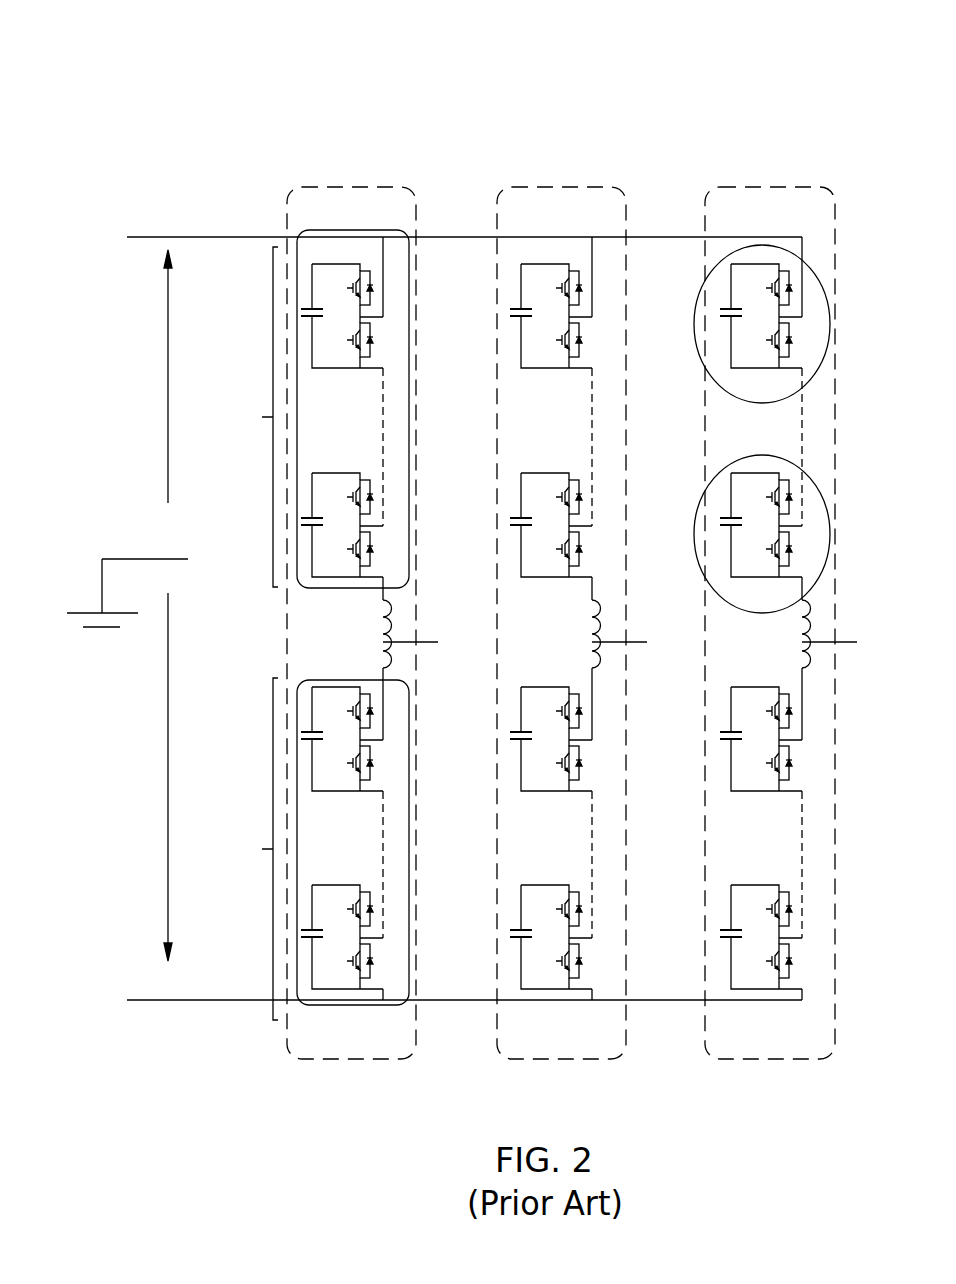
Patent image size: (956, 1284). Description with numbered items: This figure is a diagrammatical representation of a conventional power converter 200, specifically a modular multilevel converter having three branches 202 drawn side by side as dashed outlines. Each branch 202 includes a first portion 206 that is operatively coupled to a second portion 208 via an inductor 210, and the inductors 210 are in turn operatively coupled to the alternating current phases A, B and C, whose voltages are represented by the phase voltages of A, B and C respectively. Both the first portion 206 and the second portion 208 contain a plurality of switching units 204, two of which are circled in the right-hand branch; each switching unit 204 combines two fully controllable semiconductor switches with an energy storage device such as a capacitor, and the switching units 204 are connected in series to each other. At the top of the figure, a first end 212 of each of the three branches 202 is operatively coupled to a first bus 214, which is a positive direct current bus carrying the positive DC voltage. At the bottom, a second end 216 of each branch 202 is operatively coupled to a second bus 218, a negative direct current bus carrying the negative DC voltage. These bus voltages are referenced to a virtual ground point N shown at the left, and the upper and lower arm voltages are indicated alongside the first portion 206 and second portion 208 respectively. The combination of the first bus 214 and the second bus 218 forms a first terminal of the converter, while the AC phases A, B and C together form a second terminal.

The power converter 200 is at (785, 38).
The branch 202 is at (750, 186).
The switching unit 204 is at (810, 380).
The first portion 206 is at (297, 570).
The second portion 208 is at (297, 777).
The inductor 210 is at (383, 645).
The first end 212 is at (592, 255).
The first bus 214 is at (182, 236).
The second end 216 is at (383, 992).
The second bus 218 is at (228, 1000).